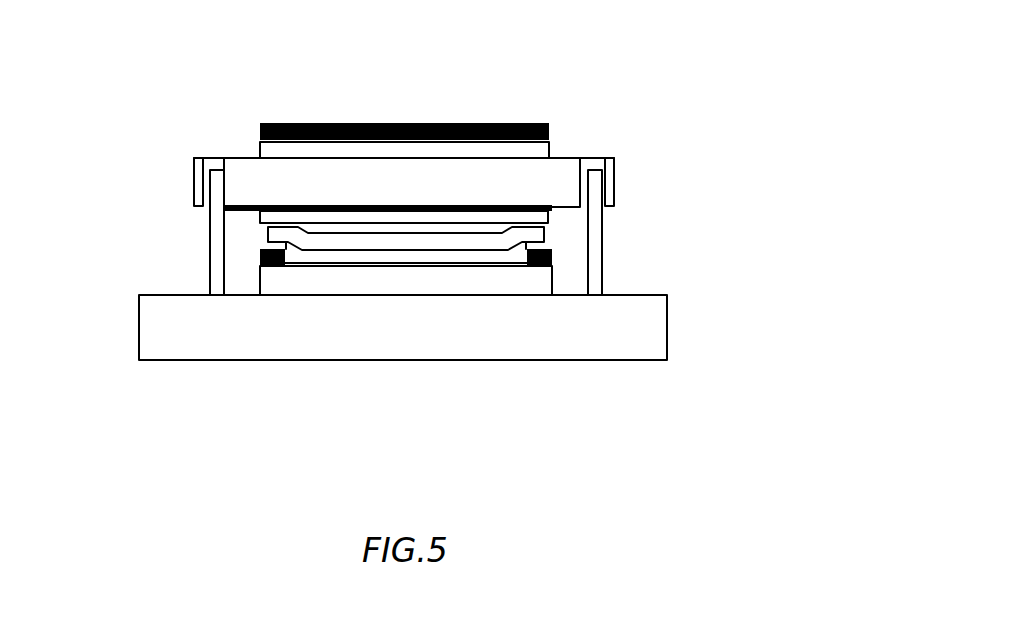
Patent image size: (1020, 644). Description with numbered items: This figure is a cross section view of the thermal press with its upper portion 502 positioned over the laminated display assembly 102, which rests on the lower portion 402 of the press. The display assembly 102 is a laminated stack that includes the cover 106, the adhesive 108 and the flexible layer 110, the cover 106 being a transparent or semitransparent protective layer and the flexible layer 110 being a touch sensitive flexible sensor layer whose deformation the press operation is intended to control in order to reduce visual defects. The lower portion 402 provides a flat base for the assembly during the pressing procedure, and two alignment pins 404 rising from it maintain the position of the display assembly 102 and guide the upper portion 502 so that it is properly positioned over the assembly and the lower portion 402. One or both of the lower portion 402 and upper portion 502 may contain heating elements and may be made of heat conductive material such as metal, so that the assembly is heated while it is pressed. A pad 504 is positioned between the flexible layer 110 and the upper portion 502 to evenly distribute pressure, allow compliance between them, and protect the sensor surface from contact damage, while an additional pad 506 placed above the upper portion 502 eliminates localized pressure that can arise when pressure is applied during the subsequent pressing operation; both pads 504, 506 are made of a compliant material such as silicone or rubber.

The laminated display assembly 102 is at (260, 278).
The cover 106 is at (533, 297).
The adhesive 108 is at (423, 257).
The flexible layer 110 is at (327, 243).
The lower portion 402 is at (667, 323).
The alignment pins 404 is at (217, 223).
The upper portion 502 is at (580, 158).
The pad 504 is at (548, 207).
The additional pad 506 is at (548, 122).